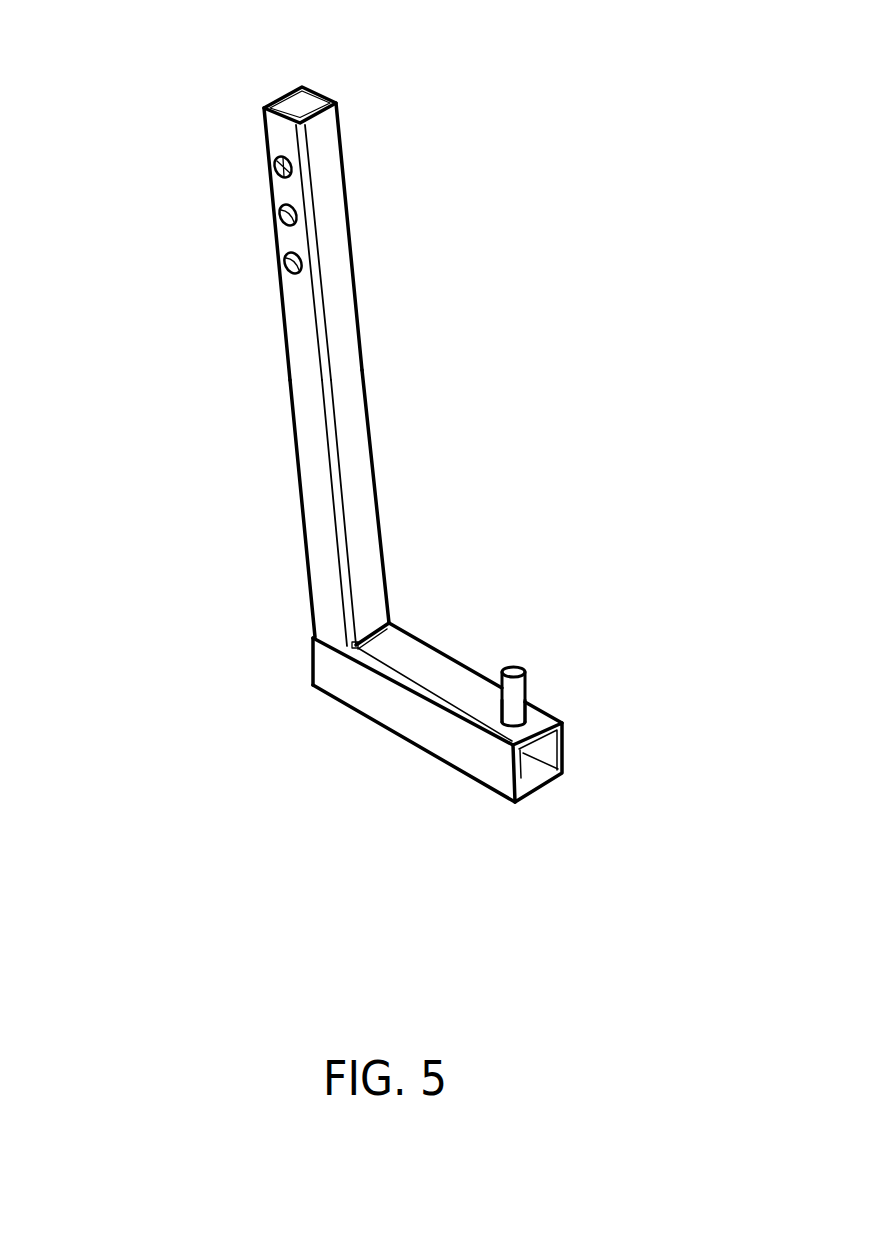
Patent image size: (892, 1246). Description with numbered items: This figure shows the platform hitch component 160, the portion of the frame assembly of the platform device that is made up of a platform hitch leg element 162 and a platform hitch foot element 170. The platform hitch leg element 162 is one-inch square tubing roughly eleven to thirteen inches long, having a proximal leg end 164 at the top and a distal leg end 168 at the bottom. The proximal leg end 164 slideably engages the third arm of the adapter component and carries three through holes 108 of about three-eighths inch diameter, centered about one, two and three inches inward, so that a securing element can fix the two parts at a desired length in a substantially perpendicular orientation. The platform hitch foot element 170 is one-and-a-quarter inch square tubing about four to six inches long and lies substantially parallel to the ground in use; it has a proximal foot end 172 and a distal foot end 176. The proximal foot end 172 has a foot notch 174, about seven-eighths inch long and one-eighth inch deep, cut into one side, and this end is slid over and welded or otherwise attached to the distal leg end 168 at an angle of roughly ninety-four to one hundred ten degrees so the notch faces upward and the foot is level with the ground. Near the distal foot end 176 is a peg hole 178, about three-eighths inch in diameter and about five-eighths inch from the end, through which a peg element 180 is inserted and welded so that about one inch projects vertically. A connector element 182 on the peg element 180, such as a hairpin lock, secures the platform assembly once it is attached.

The platform hitch component 160 is at (505, 362).
The platform hitch leg element 162 is at (338, 374).
The proximal leg end 164 is at (287, 103).
The through holes 108 is at (277, 167).
The distal leg end 168 is at (333, 615).
The platform hitch foot element 170 is at (433, 737).
The proximal foot end 172 is at (314, 661).
The foot notch 174 is at (333, 642).
The distal foot end 176 is at (547, 743).
The peg hole 178 is at (527, 715).
The peg element 180 is at (523, 693).
The connector element 182 is at (507, 688).